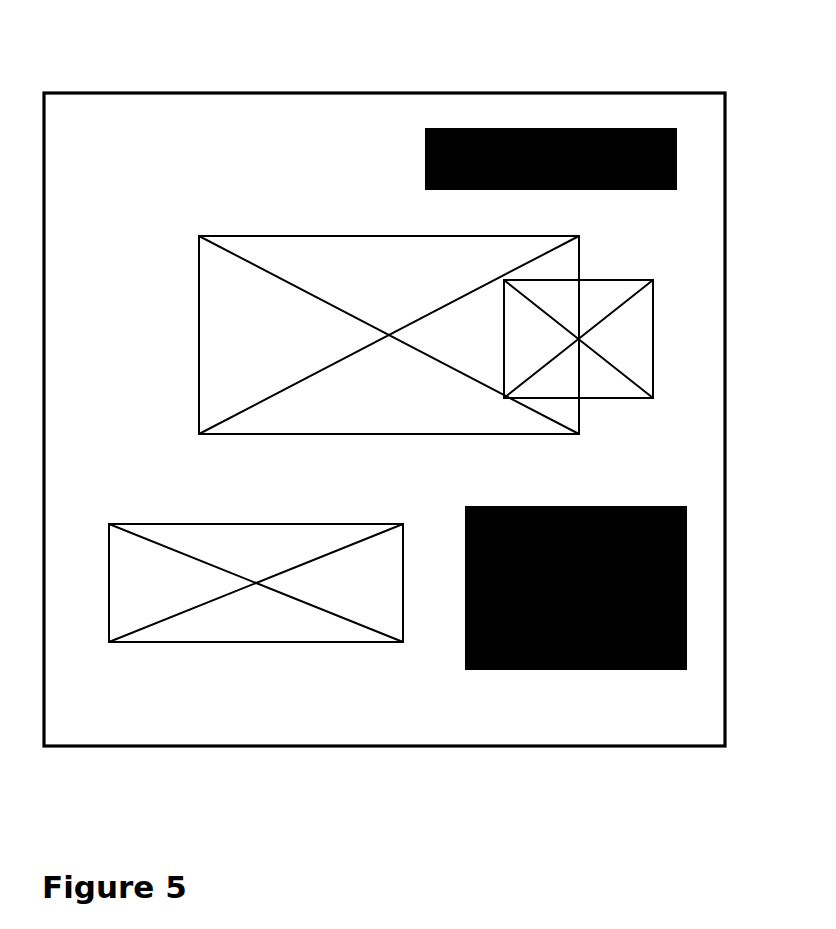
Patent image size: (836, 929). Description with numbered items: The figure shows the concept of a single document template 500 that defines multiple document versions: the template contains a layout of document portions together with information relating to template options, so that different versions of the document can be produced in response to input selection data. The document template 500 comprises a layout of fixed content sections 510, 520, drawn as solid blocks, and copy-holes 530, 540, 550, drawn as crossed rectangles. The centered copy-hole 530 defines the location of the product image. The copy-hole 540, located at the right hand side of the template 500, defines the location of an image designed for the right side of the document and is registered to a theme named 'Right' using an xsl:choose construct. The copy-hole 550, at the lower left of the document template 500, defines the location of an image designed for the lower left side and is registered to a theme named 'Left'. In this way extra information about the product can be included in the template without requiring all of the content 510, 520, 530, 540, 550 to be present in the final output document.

The document template 500 is at (150, 93).
The fixed content section 510 is at (600, 128).
The fixed content section 520 is at (554, 670).
The copy-hole 530 is at (350, 236).
The copy-hole 540 is at (653, 332).
The copy-hole 550 is at (256, 642).